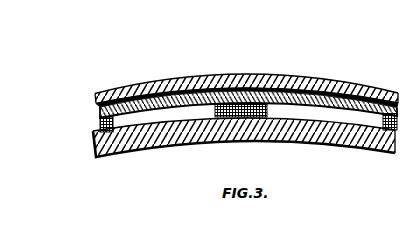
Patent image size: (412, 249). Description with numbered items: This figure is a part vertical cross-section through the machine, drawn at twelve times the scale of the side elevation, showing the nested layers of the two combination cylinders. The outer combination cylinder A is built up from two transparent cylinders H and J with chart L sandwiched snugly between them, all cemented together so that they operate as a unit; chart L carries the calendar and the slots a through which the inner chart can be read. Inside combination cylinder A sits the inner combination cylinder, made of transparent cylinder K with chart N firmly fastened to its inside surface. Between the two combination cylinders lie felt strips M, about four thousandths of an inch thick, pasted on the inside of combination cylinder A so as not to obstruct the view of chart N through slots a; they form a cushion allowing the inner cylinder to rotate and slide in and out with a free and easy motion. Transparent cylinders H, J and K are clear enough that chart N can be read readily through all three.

The combination cylinder A is at (97, 116).
The transparent cylinder H is at (194, 86).
The transparent cylinder K is at (168, 85).
The slots a is at (347, 88).
The chart L is at (257, 88).
The felt strips M is at (277, 96).
The chart N is at (297, 122).
The transparent cylinder J is at (187, 120).